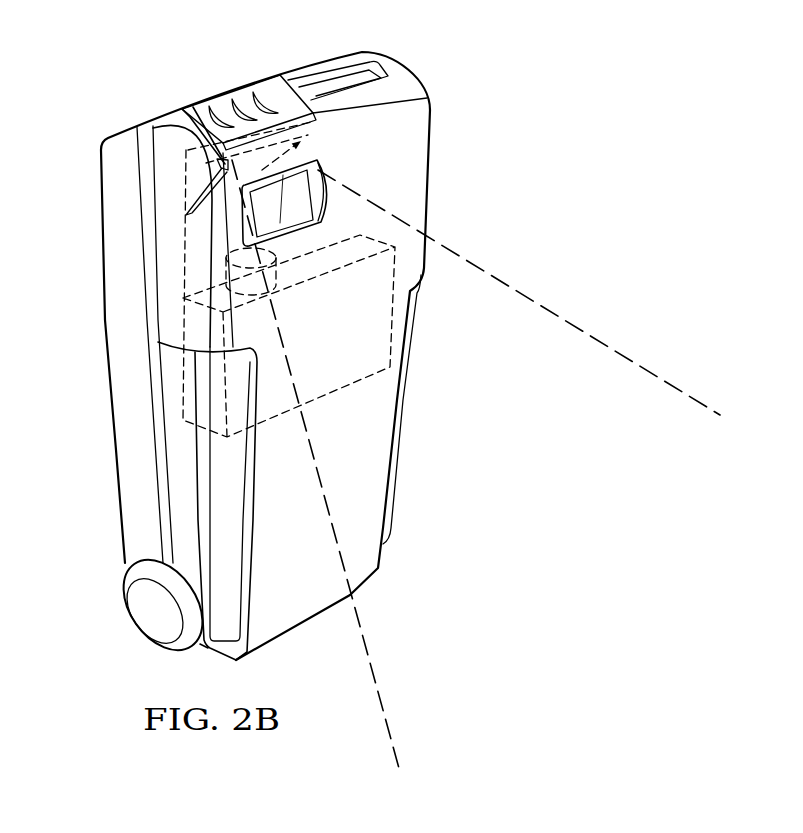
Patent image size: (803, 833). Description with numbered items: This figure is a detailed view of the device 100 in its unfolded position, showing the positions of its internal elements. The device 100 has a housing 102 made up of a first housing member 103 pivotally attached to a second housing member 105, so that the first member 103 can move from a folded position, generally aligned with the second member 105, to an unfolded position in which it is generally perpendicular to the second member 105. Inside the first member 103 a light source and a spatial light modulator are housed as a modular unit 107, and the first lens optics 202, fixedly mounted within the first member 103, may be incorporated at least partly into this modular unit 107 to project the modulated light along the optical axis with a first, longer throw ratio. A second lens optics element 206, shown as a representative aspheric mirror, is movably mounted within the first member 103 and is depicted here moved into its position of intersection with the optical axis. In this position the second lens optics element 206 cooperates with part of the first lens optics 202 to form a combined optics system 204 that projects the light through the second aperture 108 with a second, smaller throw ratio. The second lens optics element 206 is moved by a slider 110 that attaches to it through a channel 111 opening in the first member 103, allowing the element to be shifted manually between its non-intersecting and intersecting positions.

The device 100 is at (458, 163).
The housing 102 is at (104, 383).
The first housing member 103 is at (382, 484).
The second housing member 105 is at (127, 508).
The modular unit 107 is at (340, 390).
The second aperture 108 is at (302, 198).
The slider 110 is at (260, 82).
The channel 111 is at (345, 78).
The first lens optics 202 is at (278, 274).
The combined optics system 204 is at (227, 182).
The second lens optics element 206 is at (312, 150).